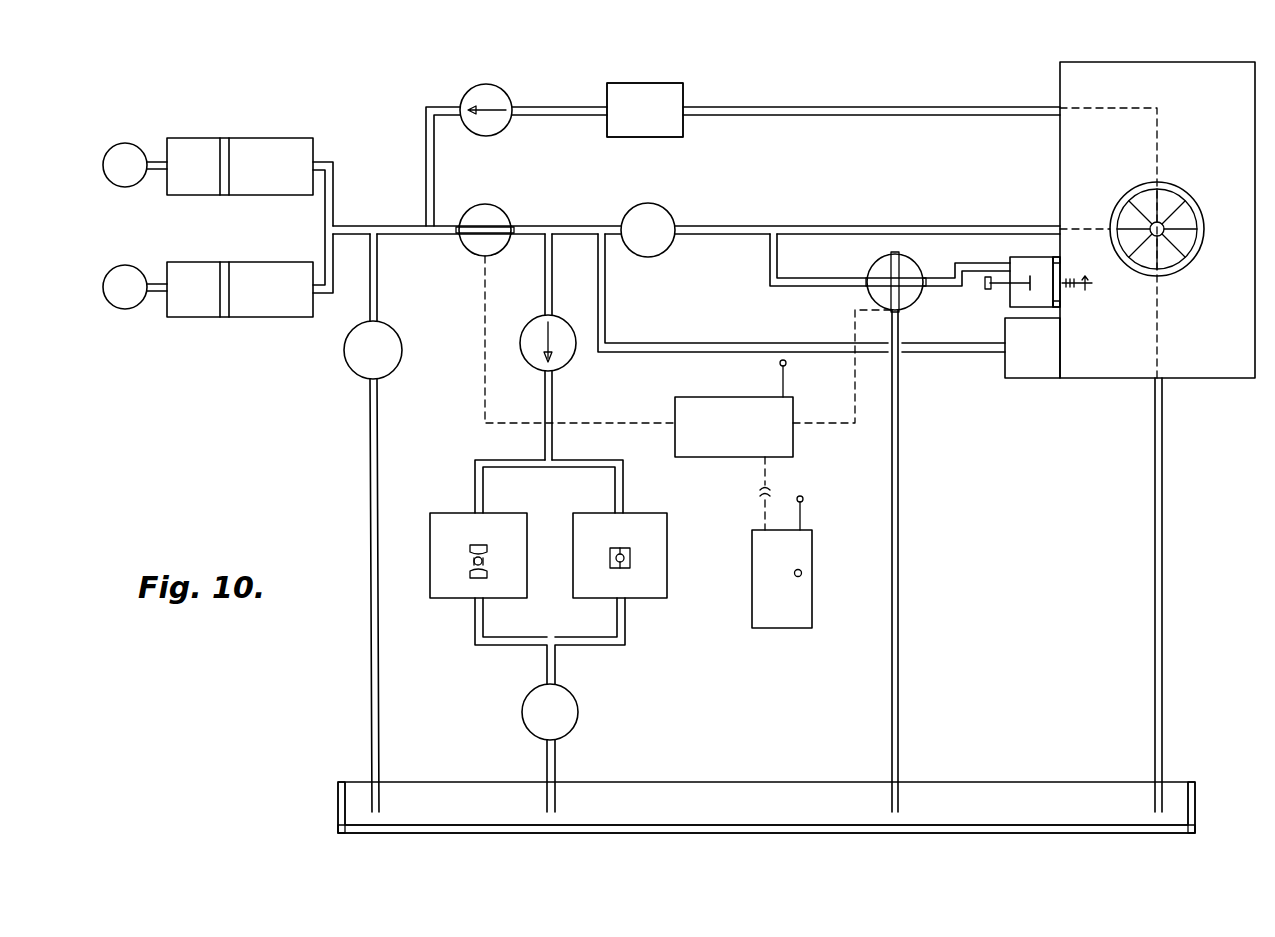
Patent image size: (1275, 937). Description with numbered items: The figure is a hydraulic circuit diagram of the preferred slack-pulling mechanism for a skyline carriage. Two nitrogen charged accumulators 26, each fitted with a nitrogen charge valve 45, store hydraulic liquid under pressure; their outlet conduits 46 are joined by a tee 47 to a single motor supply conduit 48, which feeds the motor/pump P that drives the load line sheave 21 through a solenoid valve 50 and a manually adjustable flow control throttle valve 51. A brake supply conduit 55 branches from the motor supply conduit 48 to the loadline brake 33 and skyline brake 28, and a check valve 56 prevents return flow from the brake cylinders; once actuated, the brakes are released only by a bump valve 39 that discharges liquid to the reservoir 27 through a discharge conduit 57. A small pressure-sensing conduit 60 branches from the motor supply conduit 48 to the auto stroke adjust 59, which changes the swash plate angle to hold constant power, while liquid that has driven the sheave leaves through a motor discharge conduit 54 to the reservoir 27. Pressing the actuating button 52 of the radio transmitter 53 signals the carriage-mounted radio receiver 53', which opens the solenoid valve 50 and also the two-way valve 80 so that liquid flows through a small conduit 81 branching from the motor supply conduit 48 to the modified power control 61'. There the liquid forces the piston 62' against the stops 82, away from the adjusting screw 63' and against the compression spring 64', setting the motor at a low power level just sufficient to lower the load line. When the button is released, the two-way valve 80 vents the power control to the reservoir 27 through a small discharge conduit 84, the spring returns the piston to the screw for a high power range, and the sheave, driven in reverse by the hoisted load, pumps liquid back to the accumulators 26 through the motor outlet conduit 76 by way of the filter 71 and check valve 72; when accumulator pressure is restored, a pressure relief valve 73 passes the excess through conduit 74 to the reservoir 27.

The hydraulic pump P is at (1235, 62).
The load line sheave 21 is at (1203, 245).
The accumulators 26 is at (278, 196).
The reservoir 27 is at (668, 782).
The brake 28 is at (667, 562).
The brake 33 is at (430, 556).
The bump valve 39 is at (578, 706).
The nitrogen charge valves 45 is at (120, 190).
The outlet conduits 46 is at (325, 224).
The tee 47 is at (356, 226).
The motor supply conduit 48 is at (398, 226).
The solenoid valve 50 is at (511, 214).
The flow control throttle valve 51 is at (667, 210).
The actuating button 52 is at (802, 573).
The radio transmitter 53 is at (803, 562).
The radio receiver 53' is at (734, 408).
The motor discharge conduit 54 is at (1163, 580).
The brake supply conduit 55 is at (552, 284).
The check valve 56 is at (573, 362).
The discharge conduit 57 is at (555, 762).
The auto stroke adjust 59 is at (1025, 380).
The pressure-sensing conduit 60 is at (690, 343).
The modified power control 61' is at (1018, 270).
The piston 62' is at (1037, 250).
The adjusting screw 63' is at (984, 295).
The compression spring 64' is at (1096, 285).
The filter 71 is at (662, 83).
The check valve 72 is at (512, 94).
The pressure relief valve 73 is at (345, 360).
The conduit 74 is at (370, 448).
The motor outlet conduit 76 is at (1007, 107).
The two-way valve 80 is at (912, 263).
The small conduit 81 is at (810, 286).
The stops 82 is at (1062, 257).
The small discharge conduit 84 is at (899, 607).